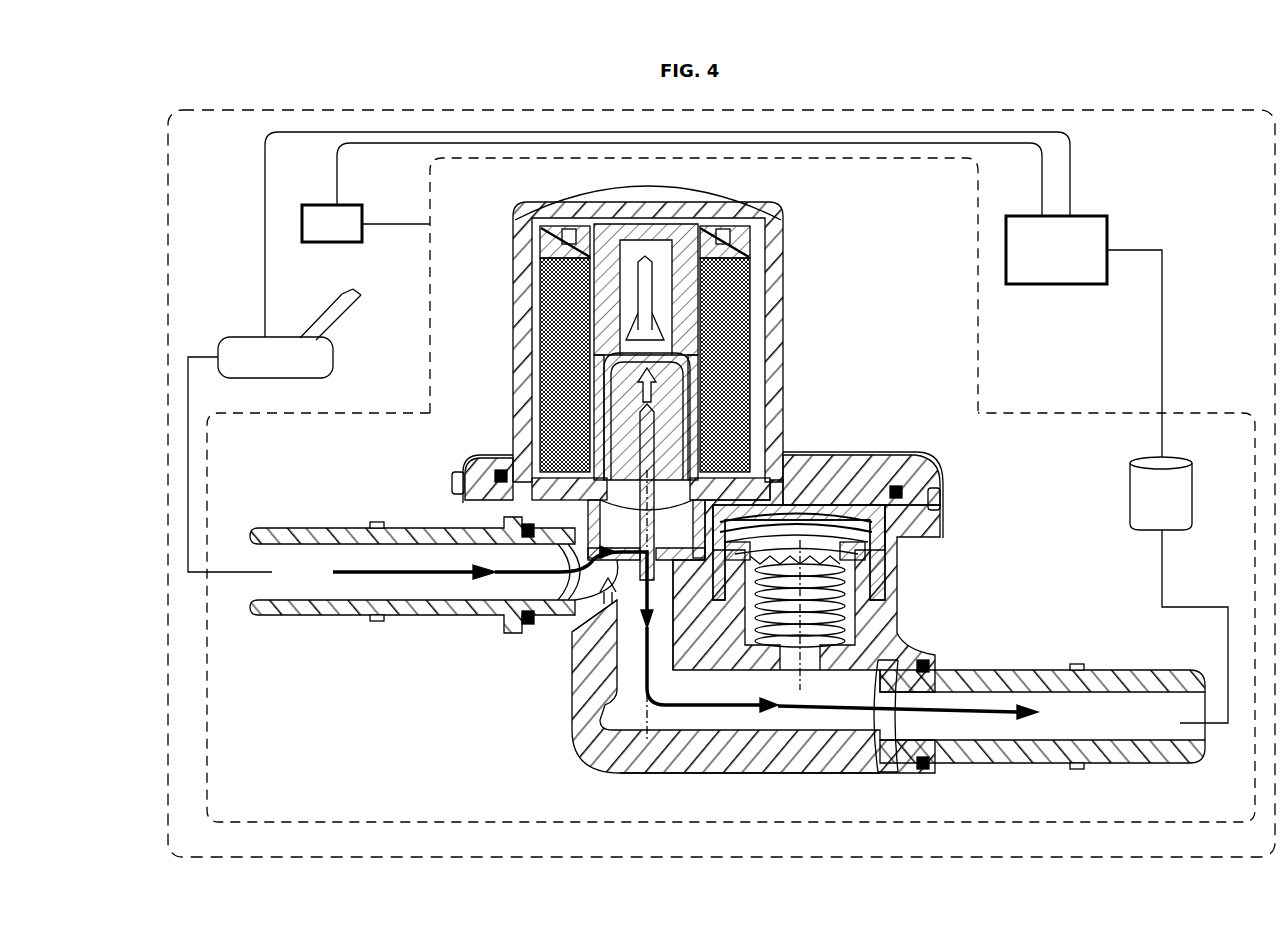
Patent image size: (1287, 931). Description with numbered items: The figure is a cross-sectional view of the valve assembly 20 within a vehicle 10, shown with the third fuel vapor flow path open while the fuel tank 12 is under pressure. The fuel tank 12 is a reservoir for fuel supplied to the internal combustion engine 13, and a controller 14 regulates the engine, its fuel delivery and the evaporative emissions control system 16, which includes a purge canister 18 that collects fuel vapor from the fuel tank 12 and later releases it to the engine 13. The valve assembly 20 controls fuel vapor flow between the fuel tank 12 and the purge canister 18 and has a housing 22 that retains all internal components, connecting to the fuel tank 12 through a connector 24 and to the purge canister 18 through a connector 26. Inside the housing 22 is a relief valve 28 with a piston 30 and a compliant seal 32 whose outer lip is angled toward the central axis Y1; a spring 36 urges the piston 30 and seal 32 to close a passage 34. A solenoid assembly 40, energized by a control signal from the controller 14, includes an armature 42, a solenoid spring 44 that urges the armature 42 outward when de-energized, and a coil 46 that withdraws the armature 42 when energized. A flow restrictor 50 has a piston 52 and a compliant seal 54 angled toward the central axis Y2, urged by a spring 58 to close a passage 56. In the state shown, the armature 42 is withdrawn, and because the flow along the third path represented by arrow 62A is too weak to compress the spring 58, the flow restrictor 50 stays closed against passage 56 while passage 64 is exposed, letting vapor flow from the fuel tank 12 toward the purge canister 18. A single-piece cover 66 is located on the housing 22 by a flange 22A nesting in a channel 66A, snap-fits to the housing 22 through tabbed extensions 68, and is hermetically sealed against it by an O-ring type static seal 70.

The vehicle 10 is at (1072, 112).
The fuel tank 12 is at (333, 360).
The internal combustion engine 13 is at (1107, 232).
The controller 14 is at (320, 205).
The evaporative emissions control system 16 is at (1013, 412).
The purge canister 18 is at (1130, 482).
The valve assembly 20 is at (508, 334).
The housing 22 is at (885, 607).
The flange 22A is at (478, 462).
The connector 24 is at (317, 615).
The connector 26 is at (1105, 668).
The relief valve 28 is at (786, 470).
The piston 30 is at (900, 580).
The compliant seal 32 is at (890, 555).
The passage 34 is at (805, 540).
The spring 36 is at (900, 635).
The solenoid assembly 40 is at (778, 288).
The armature 42 is at (788, 377).
The solenoid spring 44 is at (783, 345).
The coil 46 is at (744, 316).
The flow restrictor 50 is at (577, 632).
The piston 52 is at (587, 494).
The compliant seal 54 is at (598, 560).
The passage 56 is at (504, 505).
The spring 58 is at (690, 612).
The arrow 62A is at (787, 775).
The passage 64 is at (617, 610).
The cover 66 is at (727, 205).
The channel 66A is at (490, 452).
The tabbed extensions 68 is at (452, 482).
The static seal 70 is at (505, 463).
The central axis Y1 is at (800, 682).
The central axis Y2 is at (652, 712).